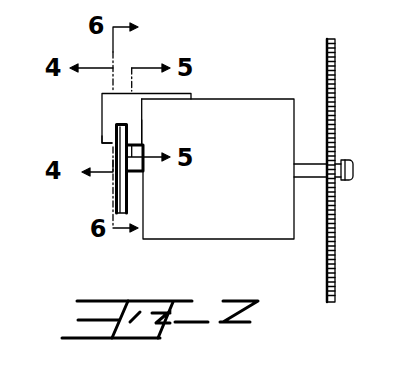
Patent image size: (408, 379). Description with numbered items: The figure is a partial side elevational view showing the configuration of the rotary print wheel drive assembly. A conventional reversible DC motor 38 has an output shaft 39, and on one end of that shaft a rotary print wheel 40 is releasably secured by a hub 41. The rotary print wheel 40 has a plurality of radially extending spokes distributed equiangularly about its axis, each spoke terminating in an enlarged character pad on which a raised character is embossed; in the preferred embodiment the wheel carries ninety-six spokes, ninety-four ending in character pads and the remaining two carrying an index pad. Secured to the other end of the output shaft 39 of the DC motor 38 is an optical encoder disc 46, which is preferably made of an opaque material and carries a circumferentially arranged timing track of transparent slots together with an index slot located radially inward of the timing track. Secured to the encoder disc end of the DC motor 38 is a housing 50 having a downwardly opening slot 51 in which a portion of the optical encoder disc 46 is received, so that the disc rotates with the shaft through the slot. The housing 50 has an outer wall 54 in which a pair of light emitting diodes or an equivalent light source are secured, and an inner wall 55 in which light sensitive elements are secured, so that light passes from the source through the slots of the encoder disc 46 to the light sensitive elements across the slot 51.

The reversible DC motor 38 is at (218, 205).
The output shaft 39 is at (310, 168).
The rotary print wheel 40 is at (335, 97).
The hub 41 is at (348, 163).
The optical encoder disc 46 is at (125, 202).
The housing 50 is at (113, 99).
The downwardly opening slot 51 is at (115, 128).
The outer wall 54 is at (107, 137).
The slot 55 is at (137, 137).